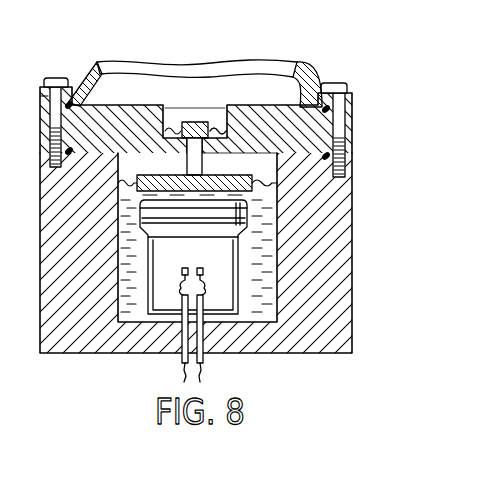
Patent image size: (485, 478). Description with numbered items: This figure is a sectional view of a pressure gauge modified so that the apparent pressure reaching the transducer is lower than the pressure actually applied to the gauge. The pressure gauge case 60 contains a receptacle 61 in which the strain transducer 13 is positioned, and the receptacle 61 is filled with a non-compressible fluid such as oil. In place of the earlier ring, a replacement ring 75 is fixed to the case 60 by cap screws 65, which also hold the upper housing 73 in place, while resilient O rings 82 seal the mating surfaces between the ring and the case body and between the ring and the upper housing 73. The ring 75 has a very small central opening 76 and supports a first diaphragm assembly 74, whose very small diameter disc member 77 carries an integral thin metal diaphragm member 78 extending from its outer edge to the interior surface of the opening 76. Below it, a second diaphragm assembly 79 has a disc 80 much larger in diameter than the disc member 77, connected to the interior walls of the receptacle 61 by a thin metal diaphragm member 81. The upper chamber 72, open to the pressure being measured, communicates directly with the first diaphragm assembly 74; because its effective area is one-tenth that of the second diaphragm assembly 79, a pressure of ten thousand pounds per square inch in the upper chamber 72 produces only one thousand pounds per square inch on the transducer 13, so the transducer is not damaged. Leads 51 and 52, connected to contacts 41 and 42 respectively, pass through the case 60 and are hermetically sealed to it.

The transducer 13 is at (176, 263).
The contact 41 is at (185, 268).
The contact 42 is at (201, 268).
The lead 51 is at (180, 292).
The lead 52 is at (207, 276).
The pressure gauge case 60 is at (62, 301).
The receptacle 61 is at (133, 308).
The cap screws 65 is at (56, 78).
The upper chamber 72 is at (299, 62).
The upper housing 73 is at (90, 63).
The first diaphragm assembly 74 is at (186, 122).
The replacement ring 75 is at (80, 130).
The central opening 76 is at (204, 110).
The disc member 77 is at (222, 118).
The thin metal diaphragm member 78 is at (218, 138).
The second diaphragm assembly 79 is at (173, 175).
The disc 80 is at (248, 173).
The thin metal diaphragm member 81 is at (278, 183).
The O rings 82 is at (42, 96).